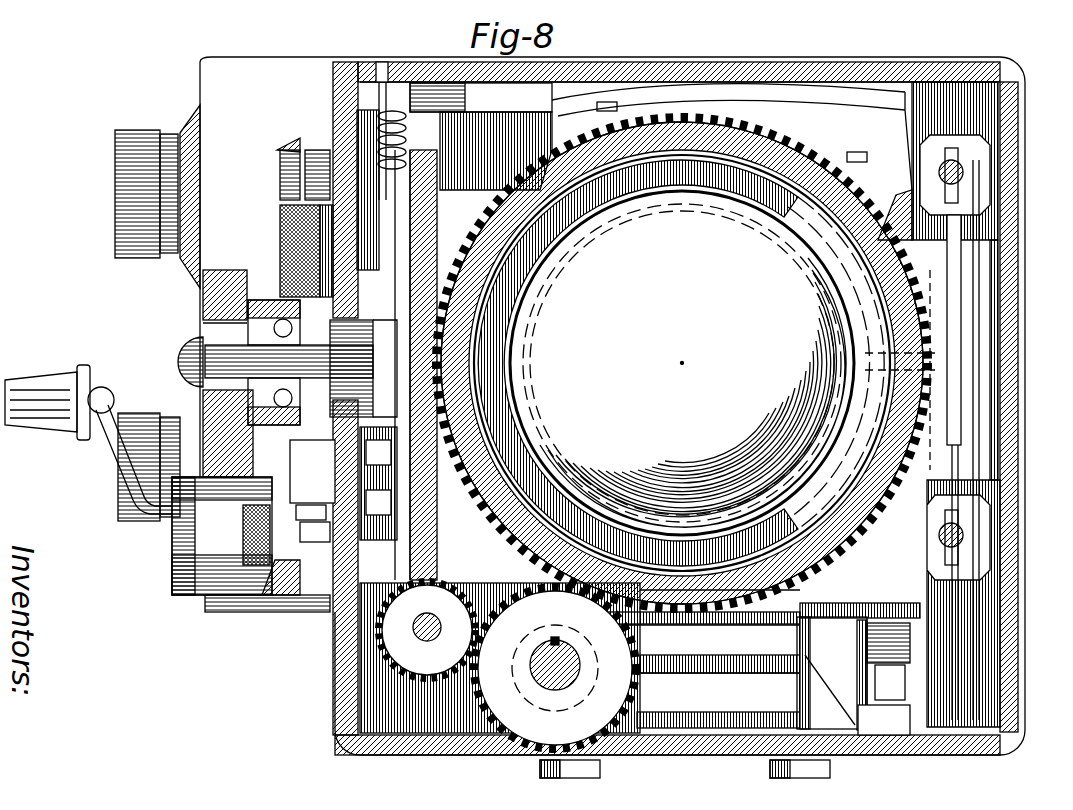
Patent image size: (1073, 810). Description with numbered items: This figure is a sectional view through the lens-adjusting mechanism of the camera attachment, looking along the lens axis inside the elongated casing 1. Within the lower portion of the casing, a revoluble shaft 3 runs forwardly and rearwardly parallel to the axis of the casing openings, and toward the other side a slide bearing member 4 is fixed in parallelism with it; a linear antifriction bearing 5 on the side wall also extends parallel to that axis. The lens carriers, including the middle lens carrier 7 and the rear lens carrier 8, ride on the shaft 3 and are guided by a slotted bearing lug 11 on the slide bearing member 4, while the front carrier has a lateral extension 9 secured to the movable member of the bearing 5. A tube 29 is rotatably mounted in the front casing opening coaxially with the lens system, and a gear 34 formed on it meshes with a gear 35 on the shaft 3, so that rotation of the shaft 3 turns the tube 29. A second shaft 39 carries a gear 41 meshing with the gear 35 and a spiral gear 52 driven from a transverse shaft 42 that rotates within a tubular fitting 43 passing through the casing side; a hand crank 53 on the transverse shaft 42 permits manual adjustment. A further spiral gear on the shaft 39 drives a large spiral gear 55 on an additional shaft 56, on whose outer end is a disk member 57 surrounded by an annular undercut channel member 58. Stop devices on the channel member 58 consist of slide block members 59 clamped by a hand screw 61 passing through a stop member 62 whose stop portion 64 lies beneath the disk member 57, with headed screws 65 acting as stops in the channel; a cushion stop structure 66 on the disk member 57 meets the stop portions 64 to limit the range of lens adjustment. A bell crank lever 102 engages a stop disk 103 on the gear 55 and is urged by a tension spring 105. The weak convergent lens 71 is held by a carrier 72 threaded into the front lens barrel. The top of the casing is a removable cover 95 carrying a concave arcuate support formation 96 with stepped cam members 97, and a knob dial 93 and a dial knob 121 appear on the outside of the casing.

The casing 1 is at (213, 62).
The revoluble shaft 3 is at (545, 682).
The slide bearing member 4 is at (910, 655).
The linear antifriction bearing 5 is at (1005, 232).
The middle lens carrier 7 is at (750, 650).
The rear lens carrier 8 is at (770, 680).
The lateral extension 9 is at (305, 38).
The slotted bearing lug 11 is at (875, 612).
The tube 29 is at (815, 165).
The gear 34 is at (690, 600).
The gear 35 is at (533, 728).
The shaft 39 is at (434, 634).
The gear 41 is at (470, 641).
The transverse shaft 42 is at (525, 500).
The tubular fitting 43 is at (205, 585).
The spiral gear 52 is at (420, 608).
The hand crank 53 is at (115, 470).
The large spiral gear 55 is at (432, 380).
The additional shaft 56 is at (176, 362).
The disk member 57 is at (262, 262).
The annular undercut channel member 58 is at (280, 150).
The slide block members 59 is at (300, 600).
The hand screw 61 is at (245, 532).
The stop member 62 is at (257, 600).
The stop portion 64 is at (305, 500).
The headed screws 65 is at (340, 541).
The cushion stop structure 66 is at (278, 226).
The lens 71 is at (700, 590).
The carrier 72 is at (520, 283).
The knob dial 93 is at (122, 197).
The removable cover 95 is at (852, 62).
The concave arcuate support formation 96 is at (870, 95).
The cam members 97 is at (690, 105).
The bell crank lever 102 is at (280, 245).
The stop disk 103 is at (400, 342).
The tension spring 105 is at (360, 135).
The dial knob 121 is at (138, 418).